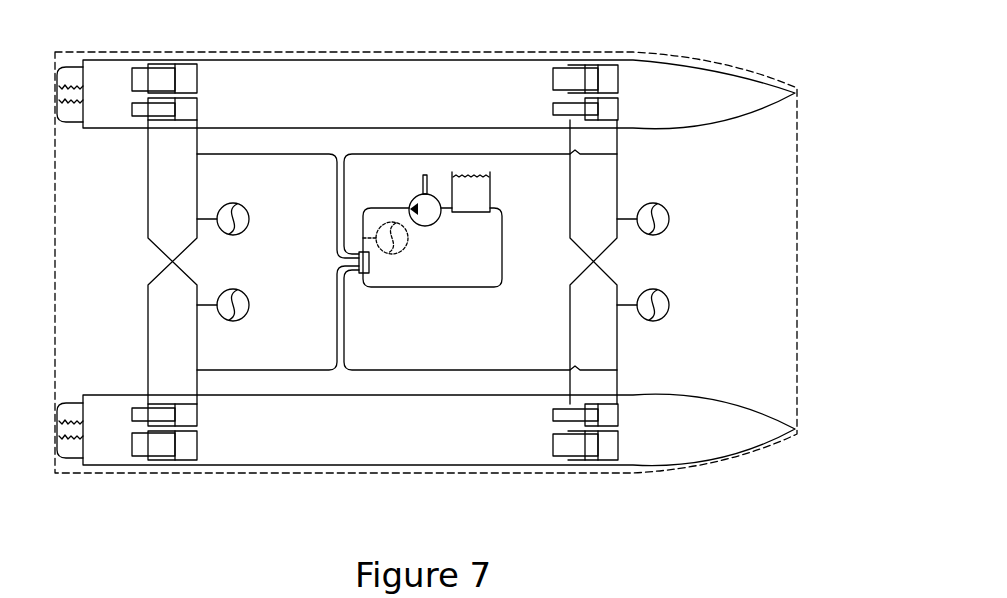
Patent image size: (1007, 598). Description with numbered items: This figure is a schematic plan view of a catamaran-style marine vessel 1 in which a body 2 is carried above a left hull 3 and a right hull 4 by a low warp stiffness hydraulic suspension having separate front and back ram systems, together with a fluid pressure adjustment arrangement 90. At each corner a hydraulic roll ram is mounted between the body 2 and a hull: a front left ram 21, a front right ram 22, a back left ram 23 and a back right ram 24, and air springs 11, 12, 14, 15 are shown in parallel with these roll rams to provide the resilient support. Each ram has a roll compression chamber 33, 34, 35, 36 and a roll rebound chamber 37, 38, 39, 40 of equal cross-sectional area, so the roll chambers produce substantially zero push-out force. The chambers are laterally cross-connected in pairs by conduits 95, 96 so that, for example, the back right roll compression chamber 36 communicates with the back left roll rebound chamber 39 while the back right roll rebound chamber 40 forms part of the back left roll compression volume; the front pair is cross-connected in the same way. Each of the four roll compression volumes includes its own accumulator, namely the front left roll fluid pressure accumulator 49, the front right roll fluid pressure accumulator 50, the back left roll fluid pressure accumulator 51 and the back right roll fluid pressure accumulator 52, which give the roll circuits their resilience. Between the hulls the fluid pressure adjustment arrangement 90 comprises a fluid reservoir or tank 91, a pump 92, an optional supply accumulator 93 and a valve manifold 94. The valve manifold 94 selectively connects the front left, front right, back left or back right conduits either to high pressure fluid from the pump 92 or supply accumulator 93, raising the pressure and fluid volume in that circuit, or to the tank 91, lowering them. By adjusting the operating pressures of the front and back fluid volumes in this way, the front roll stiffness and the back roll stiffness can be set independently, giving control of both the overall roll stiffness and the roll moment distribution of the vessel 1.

The marine vessel 1 is at (787, 43).
The body 2 is at (797, 183).
The left hull 3 is at (473, 80).
The right hull 4 is at (473, 450).
The air spring 11 is at (593, 67).
The air spring 12 is at (592, 459).
The air spring 14 is at (180, 65).
The air spring 15 is at (178, 460).
The front left ram 21 is at (540, 107).
The front right ram 22 is at (537, 418).
The back left ram 23 is at (121, 124).
The back right ram 24 is at (121, 400).
The roll compression chamber 33 is at (612, 108).
The roll compression chamber 34 is at (614, 416).
The roll compression chamber 35 is at (190, 109).
The roll compression chamber 36 is at (192, 417).
The roll rebound chamber 37 is at (572, 115).
The roll rebound chamber 38 is at (572, 408).
The roll rebound chamber 39 is at (158, 118).
The roll rebound chamber 40 is at (160, 408).
The front left roll fluid pressure accumulator 49 is at (665, 210).
The front right roll fluid pressure accumulator 50 is at (665, 316).
The back left roll fluid pressure accumulator 51 is at (245, 208).
The back right roll fluid pressure accumulator 52 is at (245, 315).
The fluid pressure adjustment arrangement 90 is at (441, 310).
The fluid reservoir 91 is at (487, 197).
The pump 92 is at (418, 202).
The supply accumulator 93 is at (407, 245).
The valve manifold 94 is at (369, 267).
The first hydraulic line 95 is at (208, 155).
The second hydraulic line 96 is at (207, 368).